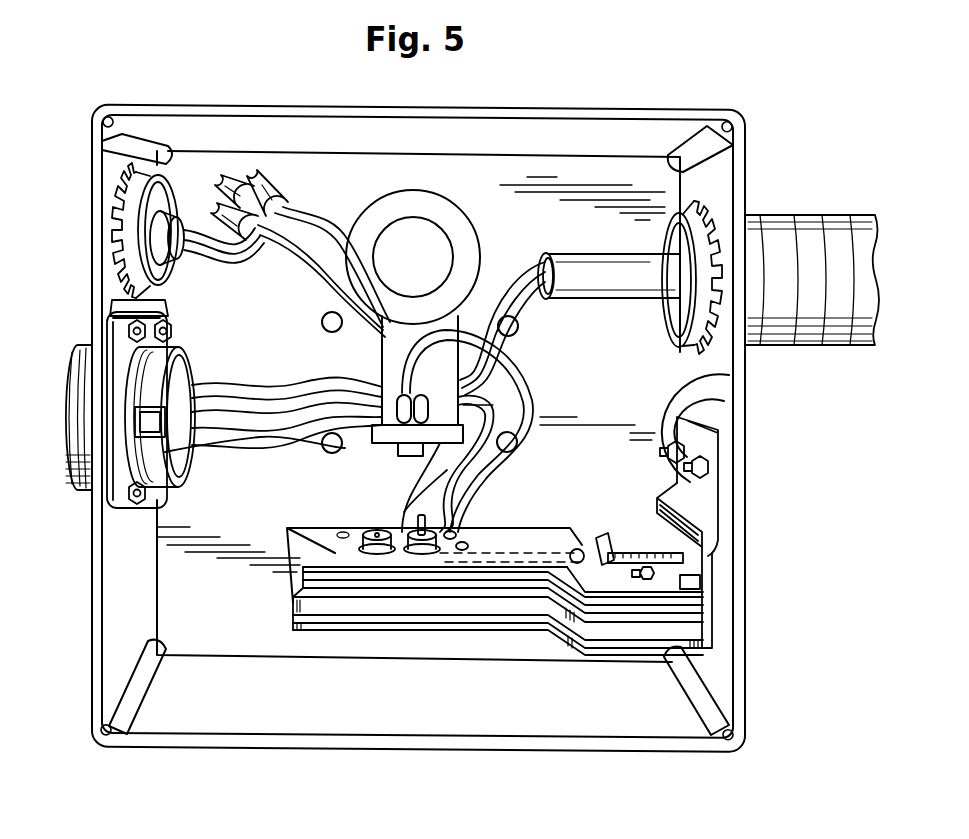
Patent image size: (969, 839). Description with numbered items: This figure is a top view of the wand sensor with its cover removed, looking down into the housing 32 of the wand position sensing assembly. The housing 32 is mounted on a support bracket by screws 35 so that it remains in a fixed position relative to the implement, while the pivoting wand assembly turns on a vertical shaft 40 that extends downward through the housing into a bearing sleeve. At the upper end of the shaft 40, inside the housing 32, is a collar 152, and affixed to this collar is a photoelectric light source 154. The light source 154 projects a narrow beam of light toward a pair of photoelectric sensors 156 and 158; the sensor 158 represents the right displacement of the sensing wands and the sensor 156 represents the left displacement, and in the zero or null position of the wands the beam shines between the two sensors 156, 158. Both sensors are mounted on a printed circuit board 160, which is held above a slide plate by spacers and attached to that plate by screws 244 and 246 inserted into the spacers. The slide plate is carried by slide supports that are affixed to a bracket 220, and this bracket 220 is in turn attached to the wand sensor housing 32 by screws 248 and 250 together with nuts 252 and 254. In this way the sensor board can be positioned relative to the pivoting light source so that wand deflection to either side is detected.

The housing 32 is at (300, 106).
The screws 35 is at (112, 293).
The vertical shaft 40 is at (438, 242).
The collar 152 is at (422, 197).
The photoelectric light source 154 is at (385, 432).
The photoelectric sensor 156 is at (377, 555).
The photoelectric sensor 158 is at (422, 555).
The printed circuit board 160 is at (295, 540).
The bracket 220 is at (708, 418).
The screw 244 is at (287, 528).
The screw 246 is at (703, 547).
The screw 248 is at (710, 366).
The screw 250 is at (706, 393).
The nut 252 is at (686, 447).
The nut 254 is at (710, 470).